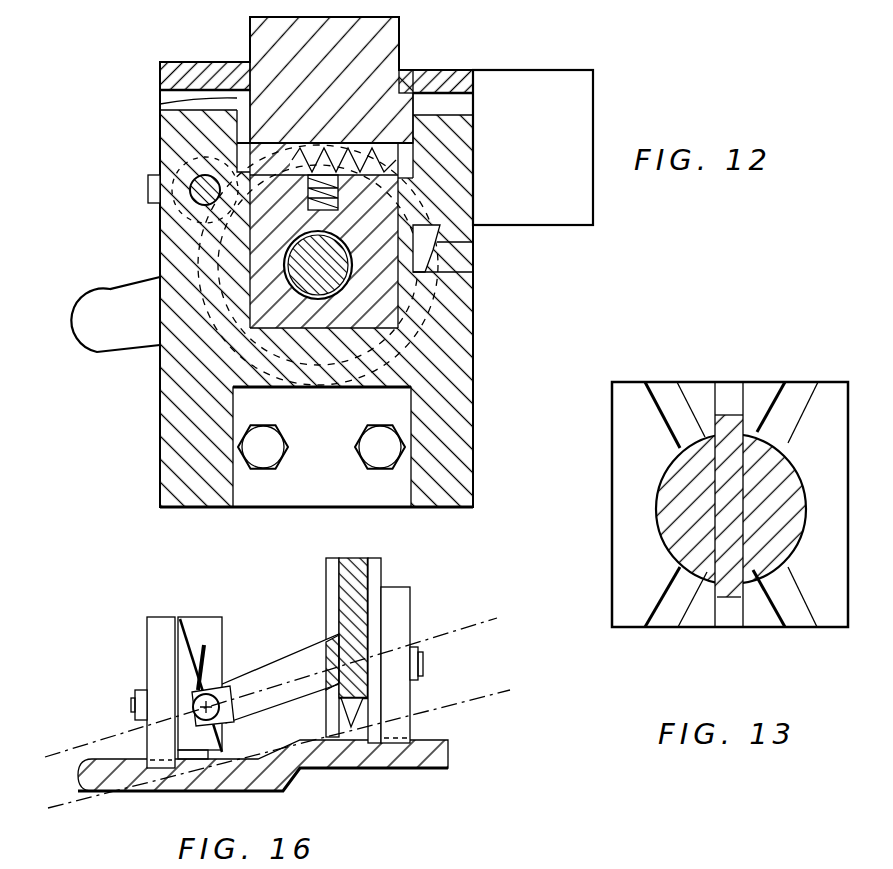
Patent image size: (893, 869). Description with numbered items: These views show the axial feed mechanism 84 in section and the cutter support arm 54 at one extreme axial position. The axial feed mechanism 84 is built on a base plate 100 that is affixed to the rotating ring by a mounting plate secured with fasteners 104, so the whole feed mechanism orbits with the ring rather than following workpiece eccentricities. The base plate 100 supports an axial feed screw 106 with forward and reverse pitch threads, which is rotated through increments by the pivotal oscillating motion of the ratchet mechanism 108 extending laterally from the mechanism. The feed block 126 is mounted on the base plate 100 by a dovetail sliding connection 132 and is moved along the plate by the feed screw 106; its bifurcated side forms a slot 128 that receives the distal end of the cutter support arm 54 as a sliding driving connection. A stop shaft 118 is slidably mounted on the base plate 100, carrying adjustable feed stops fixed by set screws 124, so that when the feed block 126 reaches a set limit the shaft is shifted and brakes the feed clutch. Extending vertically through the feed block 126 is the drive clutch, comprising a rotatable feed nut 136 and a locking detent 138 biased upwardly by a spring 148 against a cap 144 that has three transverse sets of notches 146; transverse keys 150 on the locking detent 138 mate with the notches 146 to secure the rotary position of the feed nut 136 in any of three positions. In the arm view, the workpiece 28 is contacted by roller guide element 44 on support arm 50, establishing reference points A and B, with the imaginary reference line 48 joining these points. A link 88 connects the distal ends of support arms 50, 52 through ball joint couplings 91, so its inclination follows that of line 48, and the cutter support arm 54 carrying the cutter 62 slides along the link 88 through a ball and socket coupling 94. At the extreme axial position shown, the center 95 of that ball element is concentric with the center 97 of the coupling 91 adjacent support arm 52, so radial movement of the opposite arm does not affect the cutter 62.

In FIG. 16, the workpiece 28 is at (162, 790).
In FIG. 16, the roller guide element 44 is at (225, 617).
In FIG. 16, the imaginary reference line 48 is at (462, 702).
In FIG. 16, the support arm 50 is at (160, 617).
In FIG. 16, the support arm 52 is at (398, 587).
In FIG. 16, the cutter support arm 54 is at (340, 558).
In FIG. 16, the cutter 62 is at (365, 722).
In FIG. 12, the axial feed mechanism 84 is at (153, 413).
In FIG. 16, the link 88 is at (283, 668).
In FIG. 16, the ball joint coupling 91 is at (200, 702).
In FIG. 16, the ball and socket coupling 94 is at (334, 645).
In FIG. 16, the center of ball element 95 is at (423, 665).
In FIG. 16, the center of ball element 97 is at (134, 702).
In FIG. 12, the base plate 100 is at (473, 385).
In FIG. 12, the fasteners 104 is at (283, 458).
In FIG. 12, the axial feed screw 106 is at (336, 291).
In FIG. 12, the ratchet mechanism 108 is at (115, 297).
In FIG. 12, the stop shaft 118 is at (200, 172).
In FIG. 12, the set screws 124 is at (148, 188).
In FIG. 12, the feed block 126 is at (473, 258).
In FIG. 13, the feed block 126 is at (612, 510).
In FIG. 12, the slot 128 is at (527, 70).
In FIG. 12, the dovetail sliding connection 132 is at (473, 237).
In FIG. 12, the feed nut 136 is at (262, 240).
In FIG. 16, the feed nut 136 is at (668, 867).
In FIG. 12, the locking detent 138 is at (250, 35).
In FIG. 12, the cap 144 is at (436, 70).
In FIG. 12, the notches 146 is at (161, 88).
In FIG. 13, the notches 146 is at (661, 410).
In FIG. 12, the spring 148 is at (300, 170).
In FIG. 12, the transverse keys 150 is at (160, 100).
In FIG. 13, the transverse keys 150 is at (730, 412).
In FIG. 16, the reference point A is at (225, 770).
In FIG. 16, the reference point B is at (340, 742).